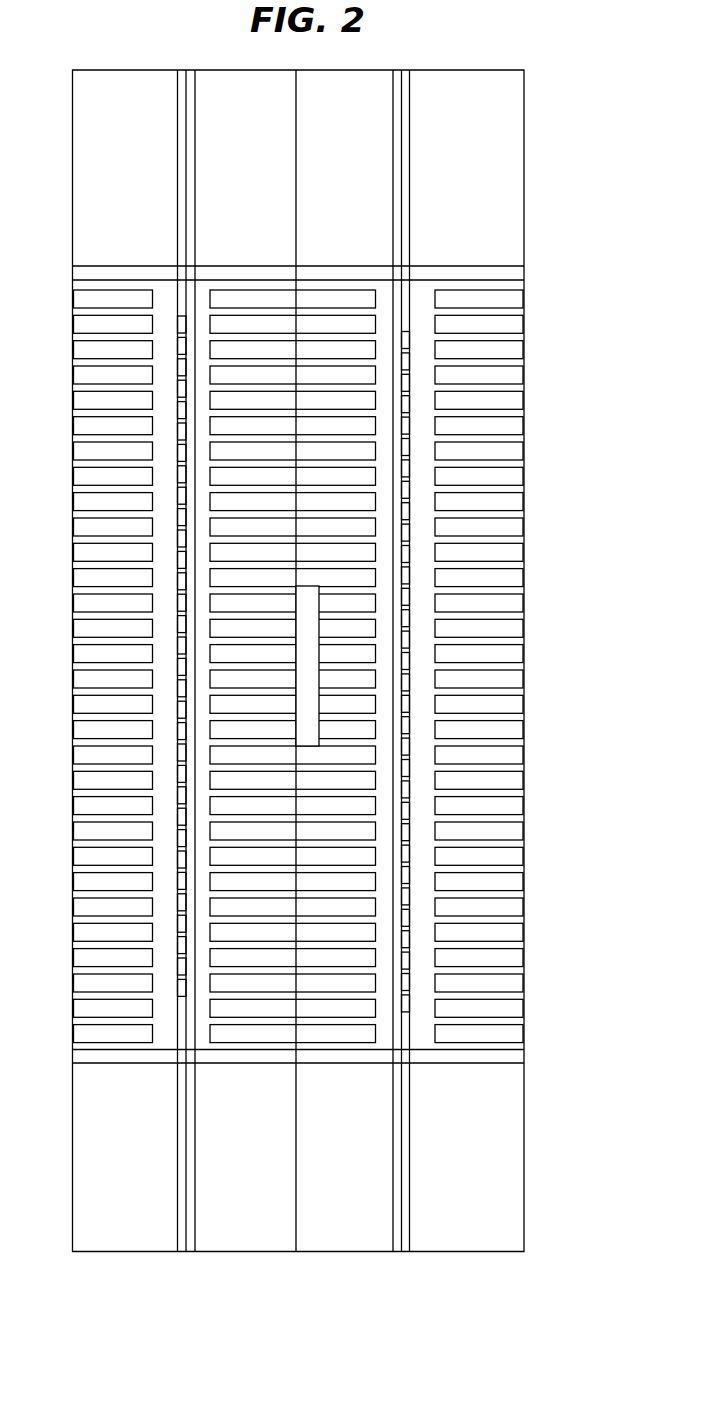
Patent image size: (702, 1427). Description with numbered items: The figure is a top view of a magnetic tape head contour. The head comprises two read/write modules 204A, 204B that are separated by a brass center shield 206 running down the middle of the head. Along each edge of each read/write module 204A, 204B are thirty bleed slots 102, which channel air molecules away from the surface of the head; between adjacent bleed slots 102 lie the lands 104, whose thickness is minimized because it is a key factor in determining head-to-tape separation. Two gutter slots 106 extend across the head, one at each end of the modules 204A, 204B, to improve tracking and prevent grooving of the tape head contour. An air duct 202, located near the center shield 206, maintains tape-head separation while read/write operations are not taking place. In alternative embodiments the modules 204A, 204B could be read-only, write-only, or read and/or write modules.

The bleed slots 102 is at (517, 883).
The lands 104 is at (517, 769).
The gutter slots 106 is at (522, 274).
The air duct 202 is at (310, 658).
The read/write module 204A is at (100, 1252).
The read/write module 204B is at (466, 1242).
The brass center shield 206 is at (294, 1252).